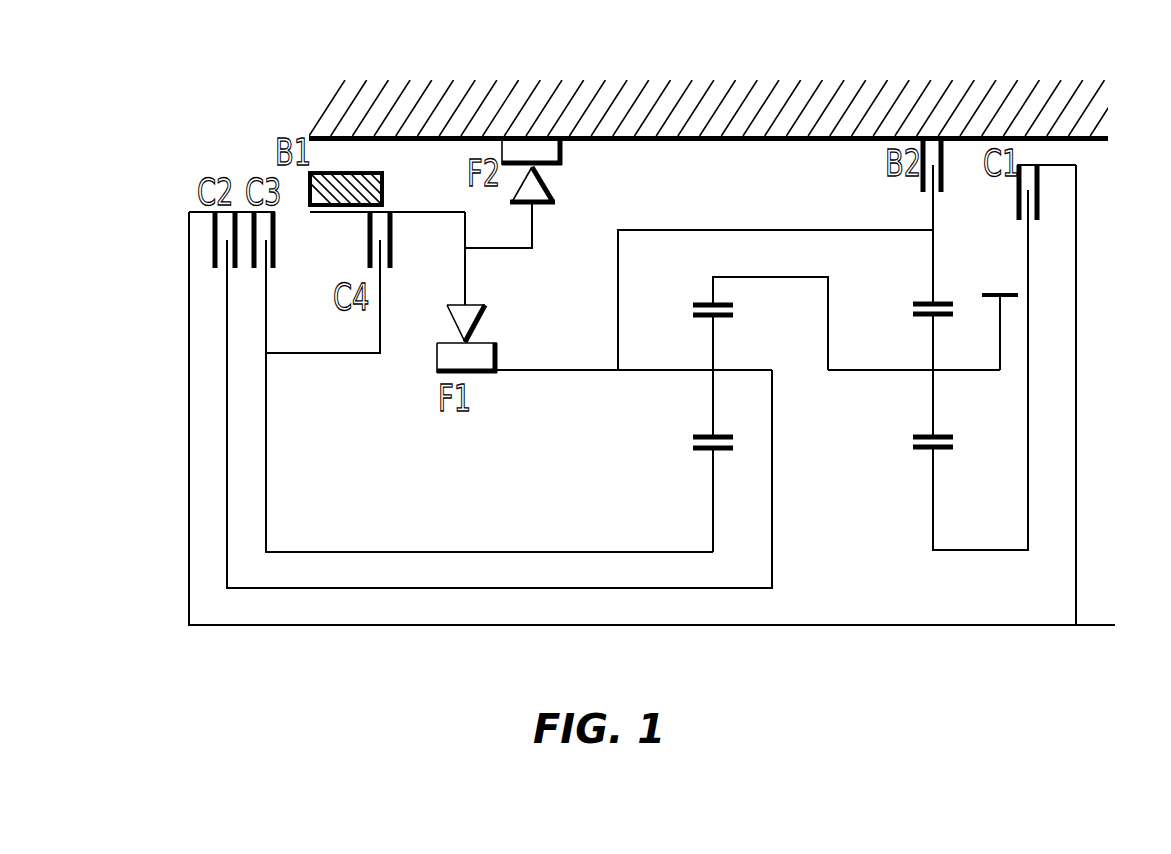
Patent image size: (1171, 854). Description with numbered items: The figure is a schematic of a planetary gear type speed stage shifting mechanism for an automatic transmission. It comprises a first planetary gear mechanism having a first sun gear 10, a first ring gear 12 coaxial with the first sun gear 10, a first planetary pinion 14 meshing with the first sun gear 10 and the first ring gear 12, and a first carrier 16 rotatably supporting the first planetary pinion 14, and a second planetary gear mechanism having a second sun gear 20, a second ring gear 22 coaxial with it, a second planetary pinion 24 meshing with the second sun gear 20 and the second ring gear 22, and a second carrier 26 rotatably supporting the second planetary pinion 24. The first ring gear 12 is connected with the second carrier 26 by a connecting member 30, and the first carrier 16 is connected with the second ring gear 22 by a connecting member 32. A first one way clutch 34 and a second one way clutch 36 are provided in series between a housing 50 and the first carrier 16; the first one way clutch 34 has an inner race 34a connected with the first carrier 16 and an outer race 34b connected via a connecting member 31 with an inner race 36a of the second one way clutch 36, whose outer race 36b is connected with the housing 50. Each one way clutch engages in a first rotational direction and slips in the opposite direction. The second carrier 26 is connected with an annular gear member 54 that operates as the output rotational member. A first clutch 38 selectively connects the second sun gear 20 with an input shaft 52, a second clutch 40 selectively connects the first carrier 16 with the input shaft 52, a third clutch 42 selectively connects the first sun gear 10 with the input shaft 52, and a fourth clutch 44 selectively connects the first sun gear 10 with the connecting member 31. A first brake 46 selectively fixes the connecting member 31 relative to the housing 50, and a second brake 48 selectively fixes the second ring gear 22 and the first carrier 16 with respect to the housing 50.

The first sun gear 10 is at (700, 451).
The first ring gear 12 is at (704, 302).
The first planetary pinion 14 is at (705, 318).
The first carrier 16 is at (634, 405).
The second sun gear 20 is at (957, 370).
The second ring gear 22 is at (920, 303).
The second planetary pinion 24 is at (940, 318).
The second carrier 26 is at (850, 373).
The connecting member 30 is at (768, 280).
The connecting member 31 is at (465, 276).
The connecting member 32 is at (718, 228).
The first one way clutch 34 is at (475, 365).
The inner race 34a is at (480, 365).
The outer race 34b is at (452, 311).
The second one way clutch 36 is at (553, 194).
The inner race 36a is at (540, 205).
The outer race 36b is at (562, 157).
The first clutch 38 is at (1014, 189).
The second clutch 40 is at (215, 242).
The third clutch 42 is at (266, 253).
The fourth clutch 44 is at (383, 250).
The first brake 46 is at (381, 184).
The second brake 48 is at (920, 184).
The housing 50 is at (1108, 138).
The input shaft 52 is at (1115, 622).
The annular gear member 54 is at (1000, 292).